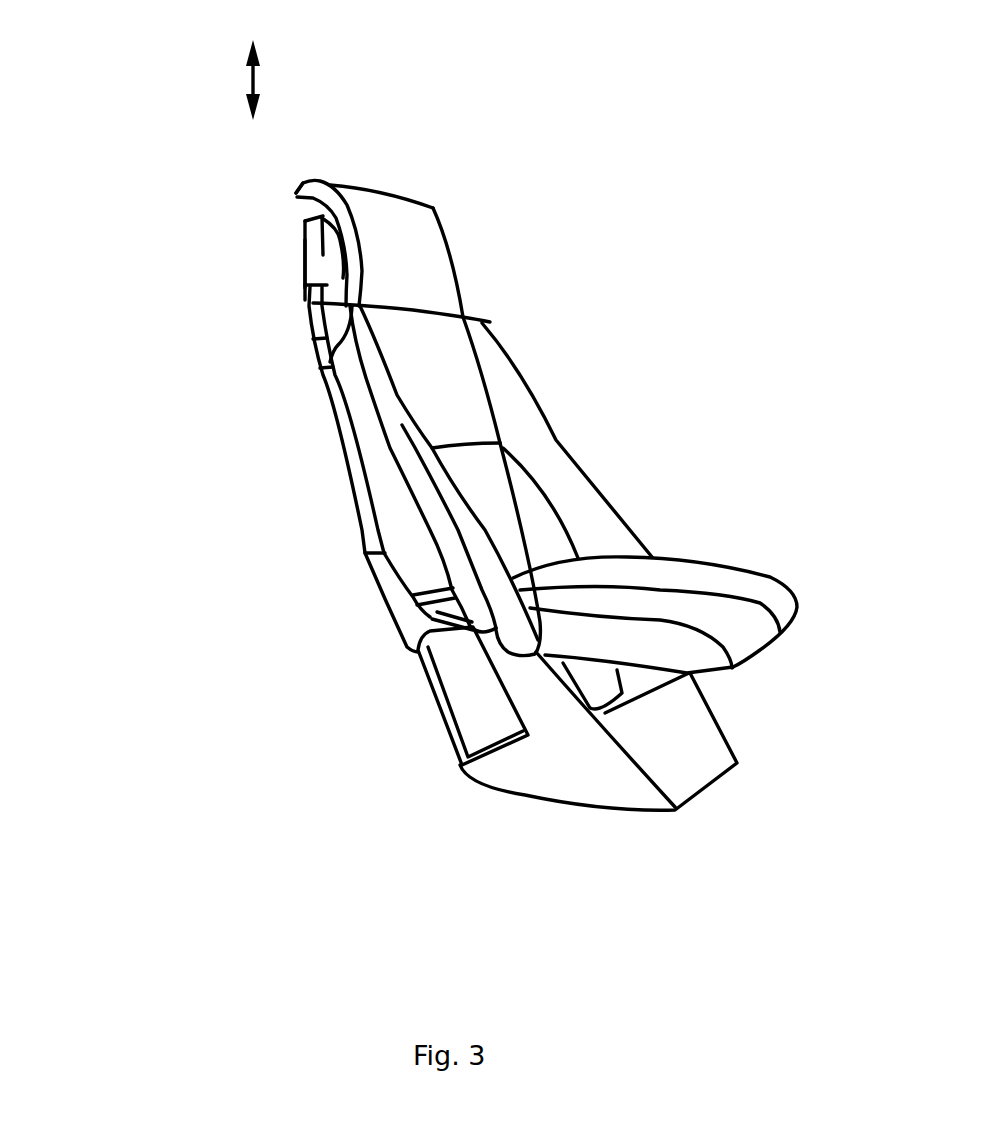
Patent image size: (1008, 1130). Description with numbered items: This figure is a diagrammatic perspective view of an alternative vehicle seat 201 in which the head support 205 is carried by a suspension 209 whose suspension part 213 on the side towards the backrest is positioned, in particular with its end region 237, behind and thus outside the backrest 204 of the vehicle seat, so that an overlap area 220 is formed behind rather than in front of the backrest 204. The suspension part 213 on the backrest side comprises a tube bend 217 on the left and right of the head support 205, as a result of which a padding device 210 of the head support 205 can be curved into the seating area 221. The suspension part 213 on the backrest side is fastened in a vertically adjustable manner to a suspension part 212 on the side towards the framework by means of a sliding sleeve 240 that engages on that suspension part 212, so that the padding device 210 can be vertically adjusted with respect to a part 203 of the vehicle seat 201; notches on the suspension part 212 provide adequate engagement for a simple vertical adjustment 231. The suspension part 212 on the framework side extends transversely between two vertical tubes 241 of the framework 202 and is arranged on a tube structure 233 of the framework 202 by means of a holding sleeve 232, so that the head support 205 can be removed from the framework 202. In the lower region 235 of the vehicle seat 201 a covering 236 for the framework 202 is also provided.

The vehicle seat 201 is at (652, 114).
The framework 202 is at (425, 702).
The part of the vehicle seat 203 is at (660, 613).
The backrest 204 is at (456, 392).
The head support 205 is at (620, 241).
The suspension 209 is at (160, 173).
The padding device 210 is at (403, 223).
The suspension part on the side towards the framework 212 is at (305, 240).
The suspension part on the side towards the backrest 213 is at (353, 226).
The tube bend 217 is at (317, 202).
The overlap area 220 is at (514, 322).
The seating area 221 is at (672, 456).
The vertical adjustment 231 is at (250, 83).
The holding sleeve 232 is at (313, 340).
The tube structure 233 is at (332, 510).
The lower region 235 is at (394, 784).
The covering 236 is at (587, 777).
The end region 237 is at (313, 303).
The sliding sleeve 240 is at (285, 270).
The vertical tubes 241 is at (320, 368).